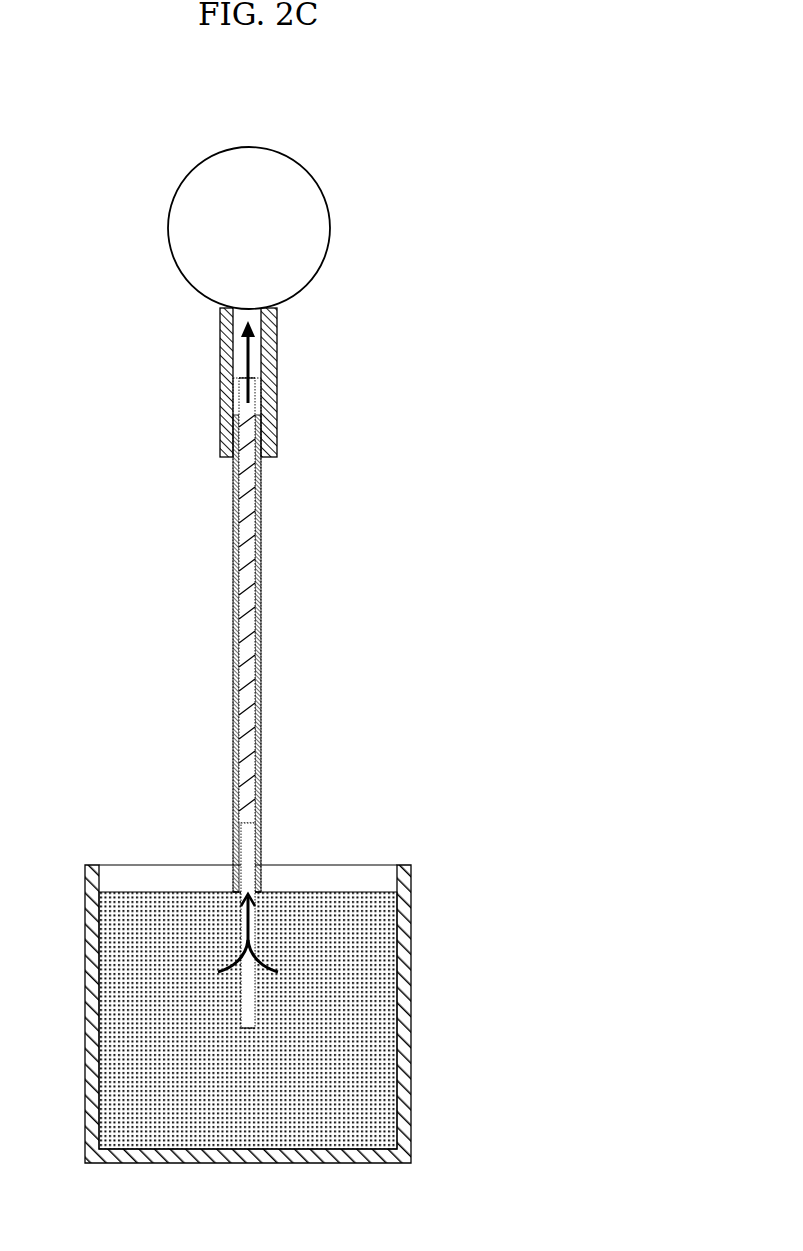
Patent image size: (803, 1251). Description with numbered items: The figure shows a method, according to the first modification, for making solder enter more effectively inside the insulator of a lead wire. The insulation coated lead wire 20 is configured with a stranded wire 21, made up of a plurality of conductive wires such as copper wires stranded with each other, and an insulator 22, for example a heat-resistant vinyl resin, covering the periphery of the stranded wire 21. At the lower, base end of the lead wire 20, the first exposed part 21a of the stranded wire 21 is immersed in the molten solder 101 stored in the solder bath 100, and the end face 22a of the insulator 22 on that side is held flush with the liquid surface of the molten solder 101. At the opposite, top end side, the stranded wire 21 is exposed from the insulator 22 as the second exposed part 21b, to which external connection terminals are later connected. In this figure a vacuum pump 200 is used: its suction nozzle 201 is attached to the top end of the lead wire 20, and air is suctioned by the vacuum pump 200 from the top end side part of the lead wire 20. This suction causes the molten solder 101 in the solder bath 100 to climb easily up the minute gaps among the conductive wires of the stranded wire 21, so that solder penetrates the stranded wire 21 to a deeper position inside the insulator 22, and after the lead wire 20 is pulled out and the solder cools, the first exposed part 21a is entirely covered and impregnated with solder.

The insulation coated lead wire 20 is at (270, 696).
The stranded wire 21 is at (240, 637).
The first exposed part 21a is at (240, 935).
The second exposed part 21b is at (232, 393).
The insulator 22 is at (260, 598).
The end face of insulator 22a is at (262, 899).
The solder bath 100 is at (120, 865).
The molten solder 101 is at (338, 891).
The vacuum pump 200 is at (332, 232).
The suction nozzle 201 is at (278, 393).